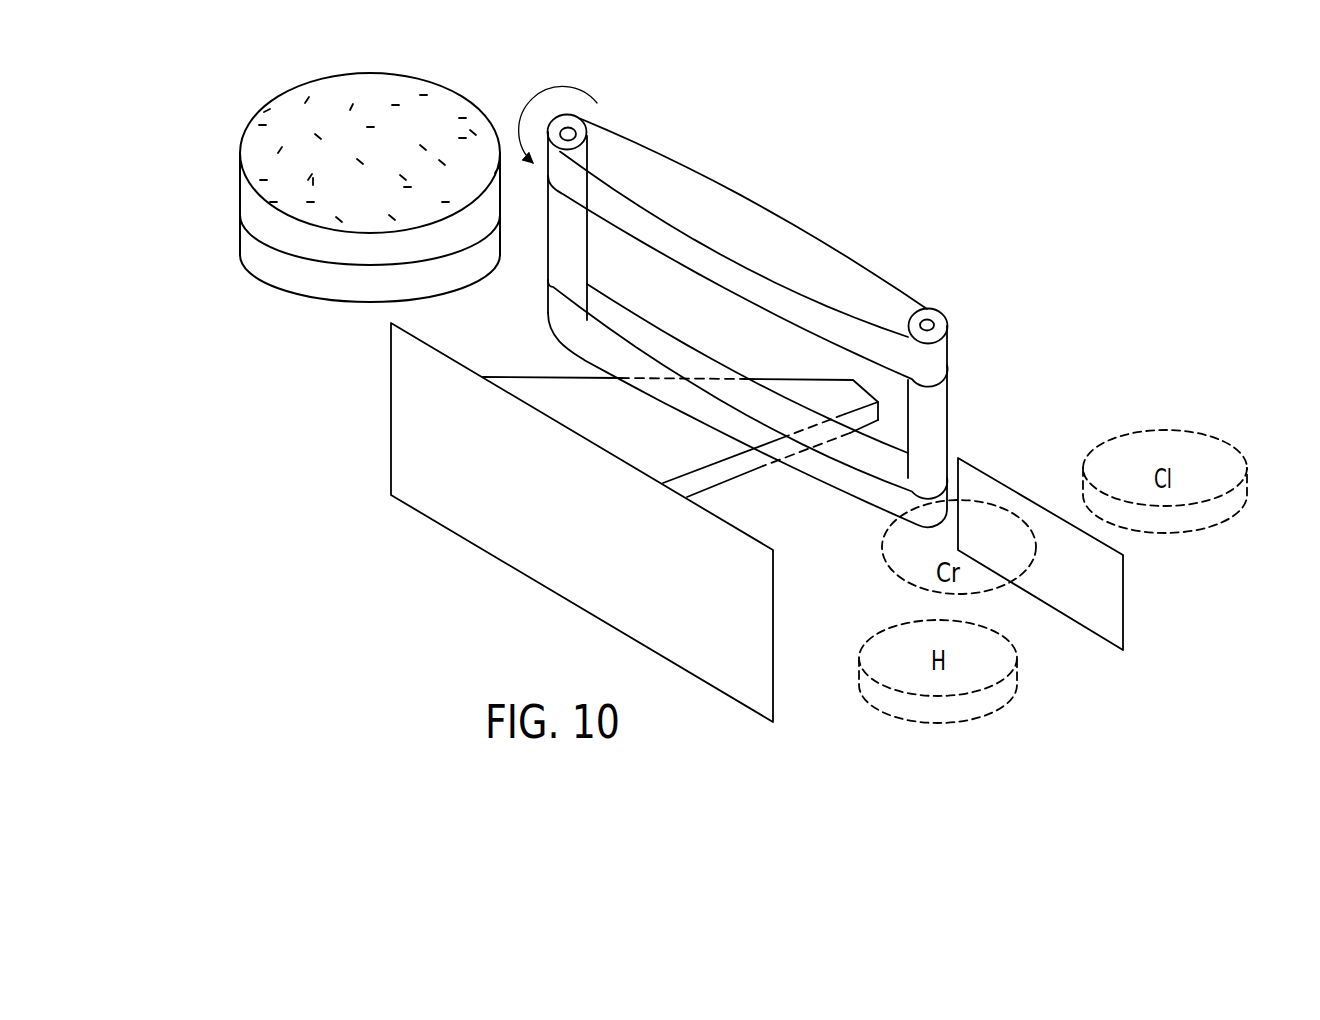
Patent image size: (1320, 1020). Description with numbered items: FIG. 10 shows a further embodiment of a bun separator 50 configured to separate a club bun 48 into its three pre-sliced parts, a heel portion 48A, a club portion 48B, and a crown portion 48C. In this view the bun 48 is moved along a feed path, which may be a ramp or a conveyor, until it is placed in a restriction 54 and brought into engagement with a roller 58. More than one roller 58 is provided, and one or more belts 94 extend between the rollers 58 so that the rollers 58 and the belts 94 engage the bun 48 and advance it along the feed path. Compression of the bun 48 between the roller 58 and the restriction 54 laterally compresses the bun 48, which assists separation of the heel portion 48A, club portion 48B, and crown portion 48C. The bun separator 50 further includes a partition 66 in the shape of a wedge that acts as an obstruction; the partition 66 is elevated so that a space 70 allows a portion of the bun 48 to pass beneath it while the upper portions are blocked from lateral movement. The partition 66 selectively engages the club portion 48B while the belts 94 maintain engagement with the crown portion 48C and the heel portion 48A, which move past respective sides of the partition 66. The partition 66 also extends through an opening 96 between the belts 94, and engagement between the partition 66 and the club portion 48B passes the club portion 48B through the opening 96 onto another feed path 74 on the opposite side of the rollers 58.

The bun 48 is at (329, 151).
The heel portion 48A is at (260, 253).
The club portion 48B is at (262, 215).
The crown portion 48C is at (265, 145).
The bun separator 50 is at (740, 306).
The restriction 54 is at (430, 408).
The roller 58 is at (588, 125).
The partition 66 is at (648, 441).
The space 70 is at (765, 507).
The feed path 74 is at (1047, 387).
The belts 94 is at (752, 215).
The opening 96 is at (800, 310).